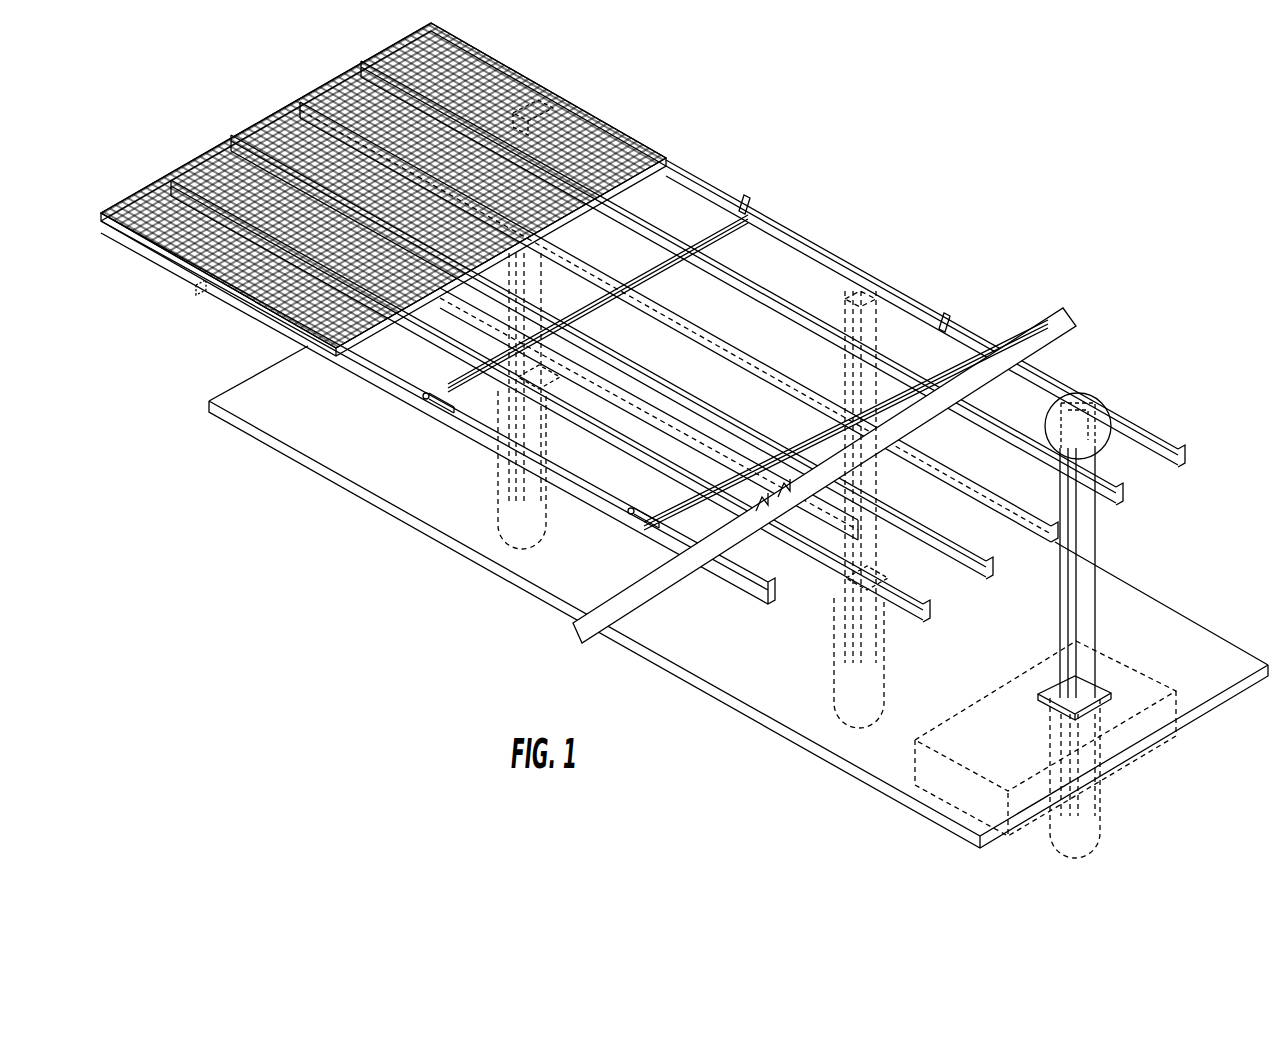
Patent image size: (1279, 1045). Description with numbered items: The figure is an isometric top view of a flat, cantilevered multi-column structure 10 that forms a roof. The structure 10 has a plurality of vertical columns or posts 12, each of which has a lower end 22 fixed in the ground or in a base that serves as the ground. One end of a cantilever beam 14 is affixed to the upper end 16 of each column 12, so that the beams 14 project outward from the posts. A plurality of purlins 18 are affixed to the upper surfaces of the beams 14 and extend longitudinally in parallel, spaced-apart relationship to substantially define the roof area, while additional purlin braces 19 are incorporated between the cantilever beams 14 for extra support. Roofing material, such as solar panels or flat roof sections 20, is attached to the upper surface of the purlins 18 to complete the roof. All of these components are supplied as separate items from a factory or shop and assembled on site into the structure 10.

The cantilevered multi-column structure 10 is at (392, 624).
The column 12 is at (528, 268).
The cantilever beam 14 is at (757, 336).
The upper end 16 is at (522, 102).
The purlin 18 is at (917, 604).
The purlin brace 19 is at (652, 273).
The flat roof section 20 is at (620, 127).
The lower end 22 is at (500, 458).